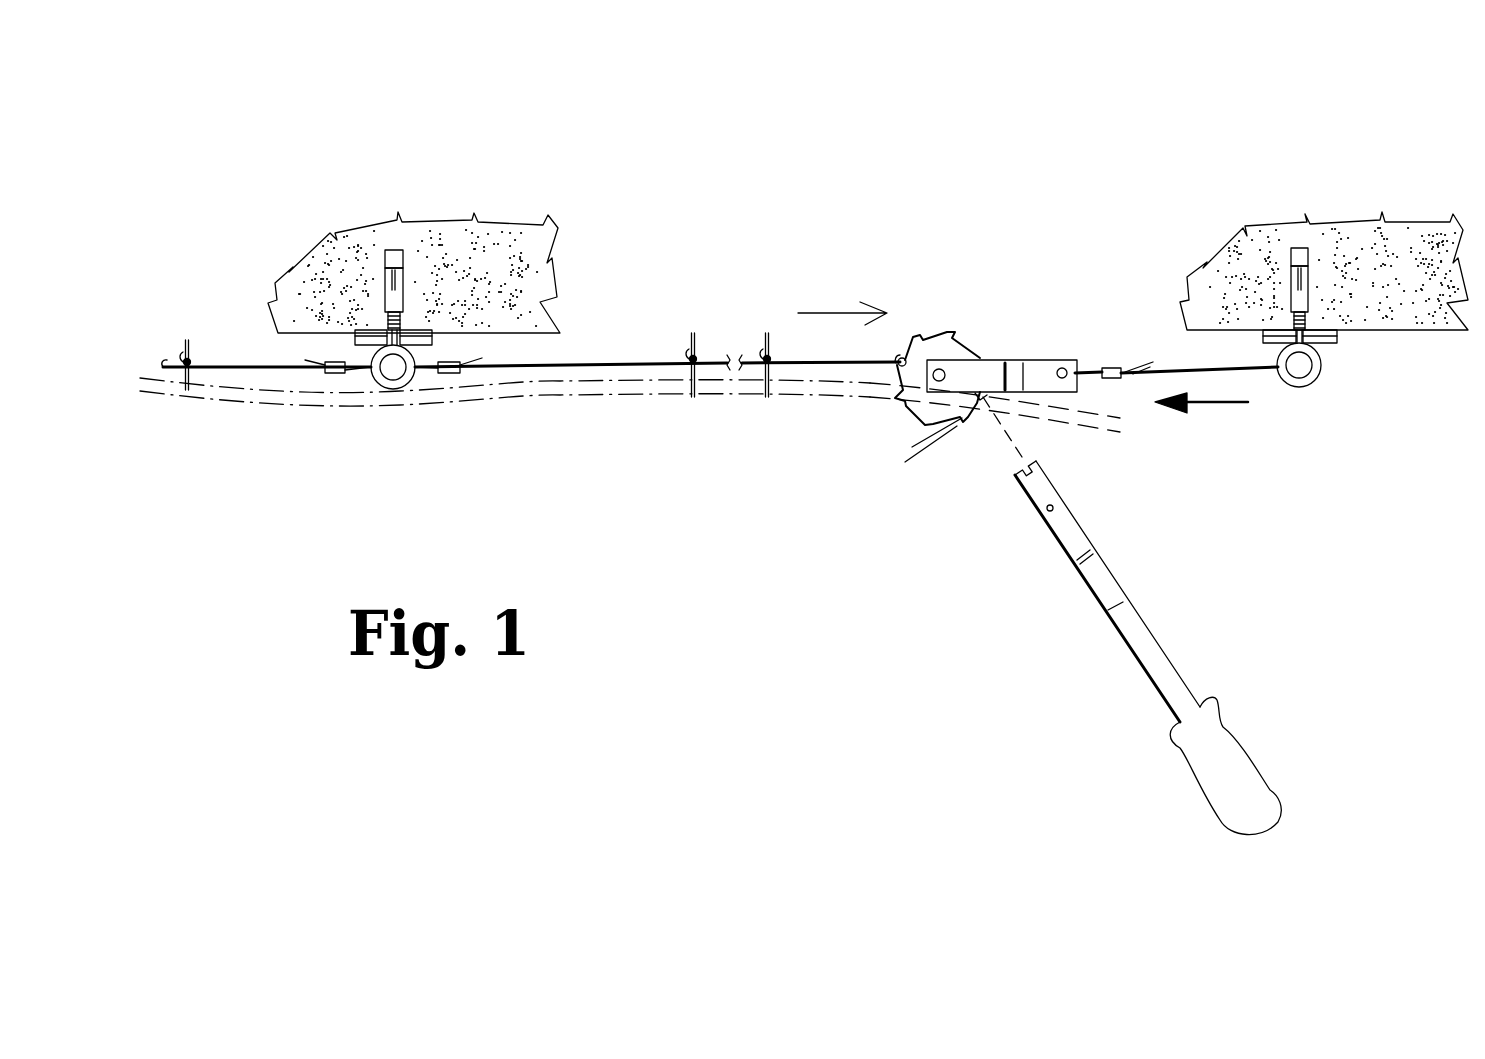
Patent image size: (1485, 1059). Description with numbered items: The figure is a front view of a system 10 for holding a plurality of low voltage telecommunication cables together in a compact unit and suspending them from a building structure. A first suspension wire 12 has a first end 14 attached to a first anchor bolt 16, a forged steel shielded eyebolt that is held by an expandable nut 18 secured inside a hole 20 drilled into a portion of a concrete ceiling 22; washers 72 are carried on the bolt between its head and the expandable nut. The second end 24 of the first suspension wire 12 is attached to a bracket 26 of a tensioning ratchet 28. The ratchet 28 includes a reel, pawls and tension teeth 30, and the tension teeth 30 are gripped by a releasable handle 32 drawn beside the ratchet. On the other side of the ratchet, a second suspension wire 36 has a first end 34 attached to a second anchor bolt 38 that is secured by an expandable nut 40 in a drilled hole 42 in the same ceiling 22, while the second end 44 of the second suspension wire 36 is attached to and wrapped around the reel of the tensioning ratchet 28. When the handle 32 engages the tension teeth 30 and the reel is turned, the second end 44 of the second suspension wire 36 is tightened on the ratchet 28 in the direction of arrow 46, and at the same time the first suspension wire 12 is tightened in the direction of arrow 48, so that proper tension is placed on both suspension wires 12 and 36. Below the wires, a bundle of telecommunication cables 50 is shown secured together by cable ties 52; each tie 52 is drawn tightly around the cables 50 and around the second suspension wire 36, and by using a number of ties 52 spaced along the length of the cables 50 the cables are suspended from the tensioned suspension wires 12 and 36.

The system 10 is at (818, 213).
The first suspension wire 12 is at (1237, 365).
The first end 14 is at (1267, 377).
The first anchor bolt 16 is at (1313, 380).
The expandable nut 18 is at (1313, 283).
The hole 20 is at (1293, 263).
The concrete ceiling 22 is at (512, 250).
The second end 24 is at (1095, 370).
The bracket 26 is at (1040, 378).
The tensioning ratchet 28 is at (915, 373).
The tension teeth 30 is at (905, 462).
The releasable handle 32 is at (1132, 640).
The first end 34 is at (432, 375).
The second suspension wire 36 is at (605, 357).
The second anchor bolt 38 is at (388, 390).
The expandable nut 40 is at (407, 287).
The drilled hole 42 is at (390, 255).
The second end 44 is at (897, 353).
The arrow 46 is at (817, 313).
The arrow 48 is at (1225, 405).
The telecommunication cables 50 is at (558, 397).
The cable tie 52 is at (277, 405).
The washers 72 is at (357, 340).